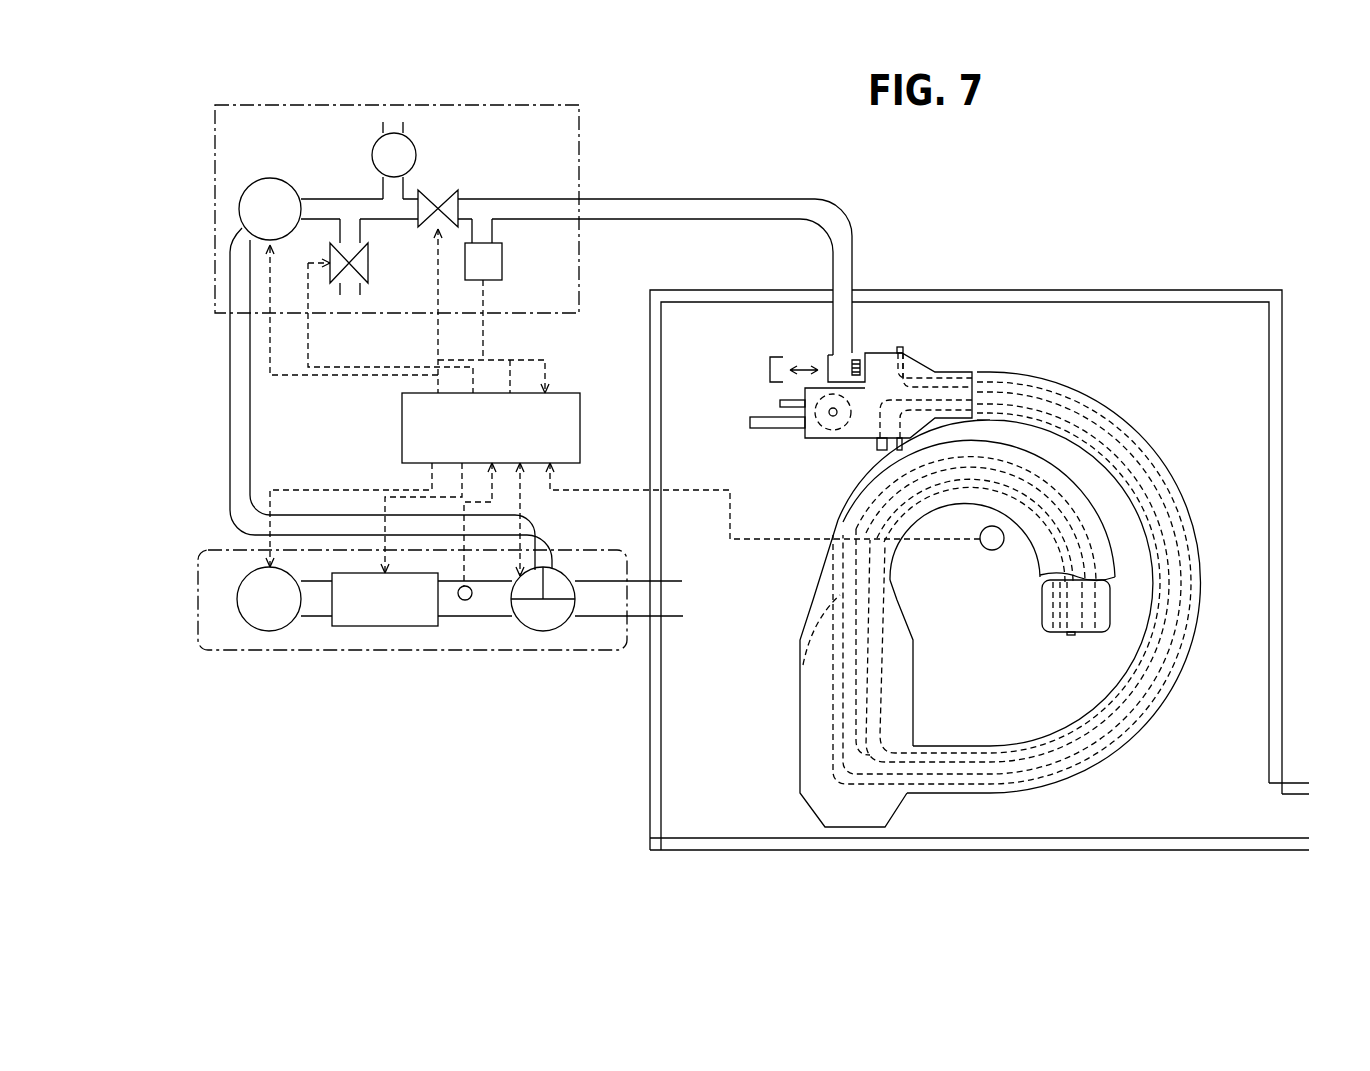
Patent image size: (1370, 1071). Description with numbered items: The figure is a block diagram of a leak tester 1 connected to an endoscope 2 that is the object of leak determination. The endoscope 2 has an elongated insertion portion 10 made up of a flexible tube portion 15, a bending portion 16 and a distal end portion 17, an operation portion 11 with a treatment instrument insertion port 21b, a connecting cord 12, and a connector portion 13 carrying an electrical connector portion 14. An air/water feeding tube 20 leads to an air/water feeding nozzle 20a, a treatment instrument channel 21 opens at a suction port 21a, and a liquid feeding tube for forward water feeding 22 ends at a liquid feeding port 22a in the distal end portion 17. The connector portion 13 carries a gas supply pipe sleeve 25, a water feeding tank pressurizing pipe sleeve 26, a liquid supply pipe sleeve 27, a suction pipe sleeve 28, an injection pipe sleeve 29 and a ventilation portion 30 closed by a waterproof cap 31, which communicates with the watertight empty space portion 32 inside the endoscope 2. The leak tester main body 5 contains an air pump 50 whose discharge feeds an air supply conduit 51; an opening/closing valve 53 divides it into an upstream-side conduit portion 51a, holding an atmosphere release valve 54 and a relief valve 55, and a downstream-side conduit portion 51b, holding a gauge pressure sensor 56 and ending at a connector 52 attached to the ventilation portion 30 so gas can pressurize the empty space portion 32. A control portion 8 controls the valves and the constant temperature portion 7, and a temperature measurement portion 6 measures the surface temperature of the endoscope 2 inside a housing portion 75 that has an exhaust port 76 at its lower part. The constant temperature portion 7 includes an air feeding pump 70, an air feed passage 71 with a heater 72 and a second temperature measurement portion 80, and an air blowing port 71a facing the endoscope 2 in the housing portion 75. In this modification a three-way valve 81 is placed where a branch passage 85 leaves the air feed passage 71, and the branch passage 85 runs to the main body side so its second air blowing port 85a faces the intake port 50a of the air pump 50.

The leak tester 1 is at (685, 134).
The endoscope 2 is at (1096, 349).
The leak tester main body 5 is at (599, 147).
The temperature measurement portion 6 is at (988, 550).
The constant temperature portion 7 is at (363, 687).
The control portion 8 is at (580, 406).
The insertion portion 10 is at (825, 507).
The operation portion 11 is at (782, 749).
The connecting cord 12 is at (1214, 555).
The connector portion 13 is at (891, 344).
The electrical connector portion 14 is at (805, 430).
The flexible tube portion 15 is at (892, 576).
The bending portion 16 is at (1030, 556).
The distal end portion 17 is at (1030, 585).
The air/water feeding tube 20 is at (1082, 532).
The air/water feeding nozzle 20a is at (1067, 636).
The treatment instrument channel 21 is at (1098, 565).
The suction port 21a is at (1087, 634).
The treatment instrument insertion port 21b is at (800, 662).
The liquid feeding tube for forward water feeding 22 is at (1070, 493).
The liquid feeding port 22a is at (1055, 634).
The gas supply pipe sleeve 25 is at (780, 403).
The water feeding tank pressurizing pipe sleeve 26 is at (902, 348).
The liquid supply pipe sleeve 27 is at (903, 353).
The suction pipe sleeve 28 is at (880, 450).
The injection pipe sleeve 29 is at (898, 452).
The ventilation portion 30 is at (862, 354).
The waterproof cap 31 is at (770, 370).
The empty space portion 32 is at (810, 703).
The air pump 50 is at (270, 178).
The intake port 50a is at (230, 256).
The air supply conduit 51 is at (681, 189).
The upstream-side conduit portion 51a is at (322, 199).
The downstream-side conduit portion 51b is at (738, 198).
The connector 52 is at (828, 362).
The opening/closing valve 53 is at (440, 197).
The atmosphere release valve 54 is at (362, 264).
The relief valve 55 is at (413, 148).
The gauge pressure sensor 56 is at (503, 264).
The air feeding pump 70 is at (265, 631).
The air feed passage 71 is at (505, 618).
The air blowing port 71a is at (683, 609).
The heater 72 is at (410, 627).
The housing portion 75 is at (1174, 287).
The exhaust port 76 is at (1318, 800).
The second temperature measurement portion 80 is at (465, 601).
The three-way valve 81 is at (542, 632).
The branch passage 85 is at (250, 423).
The second air blowing port 85a is at (250, 276).